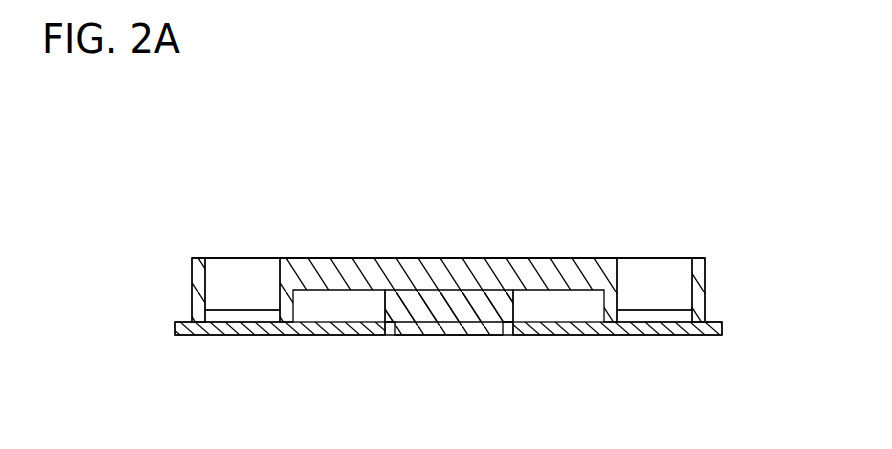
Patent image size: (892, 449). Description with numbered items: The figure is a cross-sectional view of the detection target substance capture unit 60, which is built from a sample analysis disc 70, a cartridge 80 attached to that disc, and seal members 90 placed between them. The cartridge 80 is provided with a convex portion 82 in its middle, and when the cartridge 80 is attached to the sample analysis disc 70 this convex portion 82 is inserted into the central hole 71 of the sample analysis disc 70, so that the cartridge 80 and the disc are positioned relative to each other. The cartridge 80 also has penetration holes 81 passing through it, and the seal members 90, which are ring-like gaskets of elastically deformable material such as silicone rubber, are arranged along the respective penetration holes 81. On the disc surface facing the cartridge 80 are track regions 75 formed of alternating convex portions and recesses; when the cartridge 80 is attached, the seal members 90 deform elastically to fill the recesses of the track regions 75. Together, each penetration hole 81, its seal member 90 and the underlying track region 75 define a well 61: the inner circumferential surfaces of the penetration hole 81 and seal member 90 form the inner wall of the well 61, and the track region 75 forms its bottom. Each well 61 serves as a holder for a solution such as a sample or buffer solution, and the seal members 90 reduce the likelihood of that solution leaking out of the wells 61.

The detection target substance capture unit 60 is at (503, 190).
The well 61 is at (262, 270).
The sample analysis disc 70 is at (724, 334).
The central hole 71 is at (498, 335).
The track region 75 is at (237, 313).
The cartridge 80 is at (705, 276).
The penetration hole 81 is at (210, 270).
The convex portion 82 is at (442, 335).
The seal member 90 is at (193, 312).